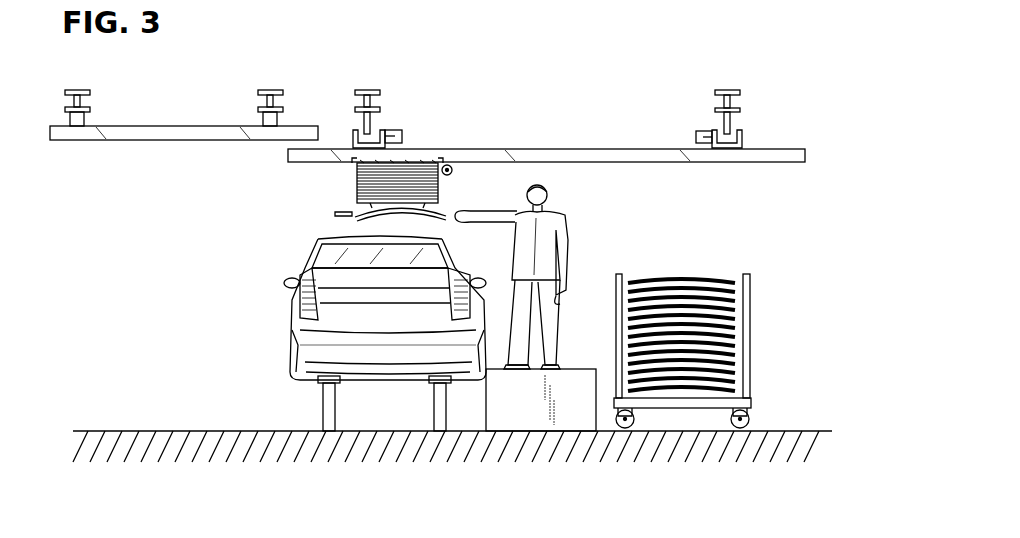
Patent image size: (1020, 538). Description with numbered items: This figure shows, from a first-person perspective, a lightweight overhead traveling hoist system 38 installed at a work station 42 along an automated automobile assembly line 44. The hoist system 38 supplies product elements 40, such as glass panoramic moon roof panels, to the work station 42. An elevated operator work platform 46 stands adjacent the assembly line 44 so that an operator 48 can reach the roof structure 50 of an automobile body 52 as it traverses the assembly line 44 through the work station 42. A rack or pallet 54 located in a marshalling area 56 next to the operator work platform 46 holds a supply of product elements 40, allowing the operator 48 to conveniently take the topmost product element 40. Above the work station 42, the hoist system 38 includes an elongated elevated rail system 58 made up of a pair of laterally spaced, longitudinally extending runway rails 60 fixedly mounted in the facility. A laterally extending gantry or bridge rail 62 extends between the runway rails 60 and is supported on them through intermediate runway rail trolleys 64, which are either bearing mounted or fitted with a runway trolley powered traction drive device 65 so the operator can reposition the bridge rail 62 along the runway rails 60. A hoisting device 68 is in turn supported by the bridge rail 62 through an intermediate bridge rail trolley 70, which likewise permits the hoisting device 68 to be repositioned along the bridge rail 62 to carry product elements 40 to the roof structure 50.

The overhead traveling hoist system 38 is at (177, 96).
The elevated rail system 58 is at (533, 134).
The bridge rail 62 is at (522, 149).
The runway rails 60 is at (377, 128).
The runway rail trolleys 64 is at (352, 140).
The runway trolley powered traction drive device 65 is at (395, 131).
The bridge rail trolley 70 is at (428, 153).
The hoisting device 68 is at (354, 184).
The product elements 40 is at (340, 214).
The work station 42 is at (617, 210).
The roof structure 50 is at (363, 333).
The automobile body 52 is at (312, 348).
The assembly line 44 is at (322, 410).
The operator 48 is at (566, 232).
The operator work platform 46 is at (578, 421).
The pallet 54 is at (752, 329).
The marshalling area 56 is at (668, 432).